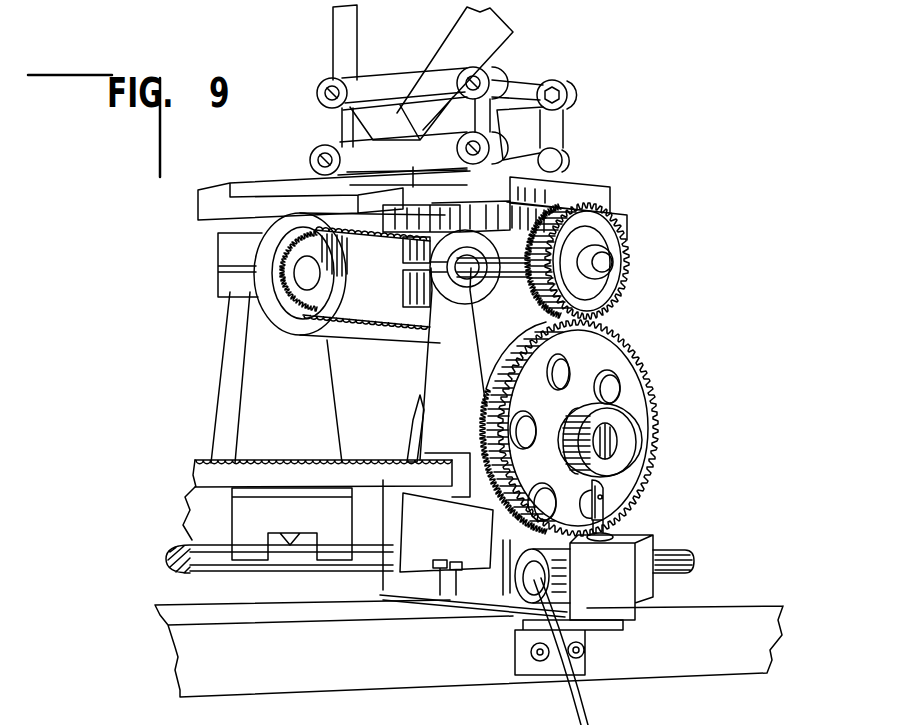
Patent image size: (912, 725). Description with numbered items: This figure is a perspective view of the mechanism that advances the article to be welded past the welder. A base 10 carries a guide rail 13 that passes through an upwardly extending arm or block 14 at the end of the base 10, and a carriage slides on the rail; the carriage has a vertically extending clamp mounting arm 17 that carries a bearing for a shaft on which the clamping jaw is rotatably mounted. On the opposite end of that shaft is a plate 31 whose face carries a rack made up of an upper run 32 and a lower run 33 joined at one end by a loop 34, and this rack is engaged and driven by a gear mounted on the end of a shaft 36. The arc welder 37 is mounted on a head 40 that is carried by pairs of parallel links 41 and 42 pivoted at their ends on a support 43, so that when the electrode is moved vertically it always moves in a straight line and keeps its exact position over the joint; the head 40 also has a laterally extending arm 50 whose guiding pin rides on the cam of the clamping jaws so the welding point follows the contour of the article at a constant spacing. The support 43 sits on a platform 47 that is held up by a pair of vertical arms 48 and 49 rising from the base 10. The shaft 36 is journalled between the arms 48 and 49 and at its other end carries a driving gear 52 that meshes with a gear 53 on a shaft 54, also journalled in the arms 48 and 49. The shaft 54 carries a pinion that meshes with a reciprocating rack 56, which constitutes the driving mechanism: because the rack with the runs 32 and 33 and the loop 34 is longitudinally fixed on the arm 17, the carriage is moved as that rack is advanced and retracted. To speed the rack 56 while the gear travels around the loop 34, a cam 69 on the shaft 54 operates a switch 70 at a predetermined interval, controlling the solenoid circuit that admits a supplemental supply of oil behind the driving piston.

The base 10 is at (418, 673).
The guide rail 13 is at (273, 568).
The upwardly extending arm 14 is at (645, 580).
The clamp mounting arm 17 is at (276, 377).
The plate 31 is at (318, 302).
The upper run 32 is at (343, 238).
The lower run 33 is at (360, 320).
The loop 34 is at (287, 262).
The shaft 36 is at (296, 280).
The arc welder 37 is at (345, 45).
The head 40 is at (342, 125).
The parallel link 41 is at (382, 88).
The parallel link 42 is at (420, 155).
The support 43 is at (553, 127).
The platform 47 is at (583, 193).
The vertical arm 48 is at (460, 345).
The vertical arm 49 is at (497, 537).
The laterally extending arm 50 is at (340, 143).
The driving gear 52 is at (617, 260).
The gear 53 is at (620, 338).
The shaft 54 is at (613, 440).
The reciprocating rack 56 is at (357, 462).
The cam 69 is at (580, 448).
The switch 70 is at (623, 560).